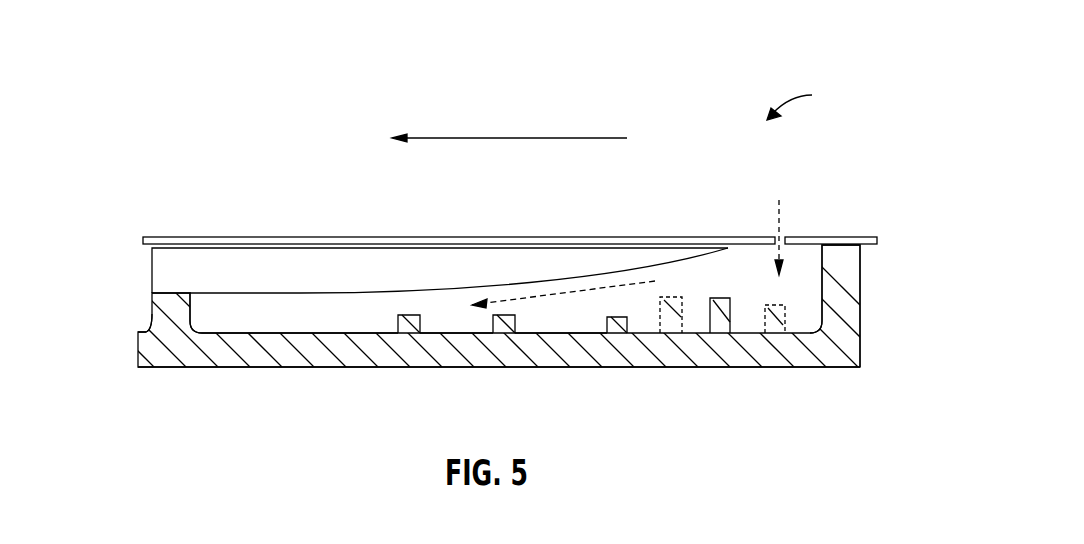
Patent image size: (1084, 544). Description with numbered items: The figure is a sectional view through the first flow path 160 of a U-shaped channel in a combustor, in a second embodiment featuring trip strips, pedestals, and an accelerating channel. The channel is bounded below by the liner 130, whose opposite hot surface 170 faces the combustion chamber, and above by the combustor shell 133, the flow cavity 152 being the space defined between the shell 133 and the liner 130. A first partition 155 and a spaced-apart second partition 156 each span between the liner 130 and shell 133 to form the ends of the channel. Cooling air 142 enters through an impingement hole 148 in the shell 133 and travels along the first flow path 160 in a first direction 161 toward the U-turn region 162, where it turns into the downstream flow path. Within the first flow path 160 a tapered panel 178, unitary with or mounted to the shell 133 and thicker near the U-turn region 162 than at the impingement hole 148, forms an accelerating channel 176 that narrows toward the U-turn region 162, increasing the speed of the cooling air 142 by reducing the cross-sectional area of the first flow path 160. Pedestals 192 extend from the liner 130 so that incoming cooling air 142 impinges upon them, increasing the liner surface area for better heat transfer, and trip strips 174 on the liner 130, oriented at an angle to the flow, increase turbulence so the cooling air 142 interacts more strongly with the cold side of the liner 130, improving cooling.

The liner 130 is at (380, 367).
The hot surface 170 is at (227, 367).
The second partition 156 is at (168, 313).
The first partition 155 is at (840, 285).
The trip strips 174 is at (619, 322).
The pedestals 192 is at (776, 318).
The flow cavity 152 is at (565, 318).
The accelerating channel 176 is at (347, 325).
The tapered panel 178 is at (310, 270).
The U-turn region 162 is at (242, 310).
The combustor shell 133 is at (668, 237).
The impingement hole 148 is at (782, 237).
The cooling air 142 is at (555, 292).
The first direction 161 is at (508, 138).
The first flow path 160 is at (815, 98).